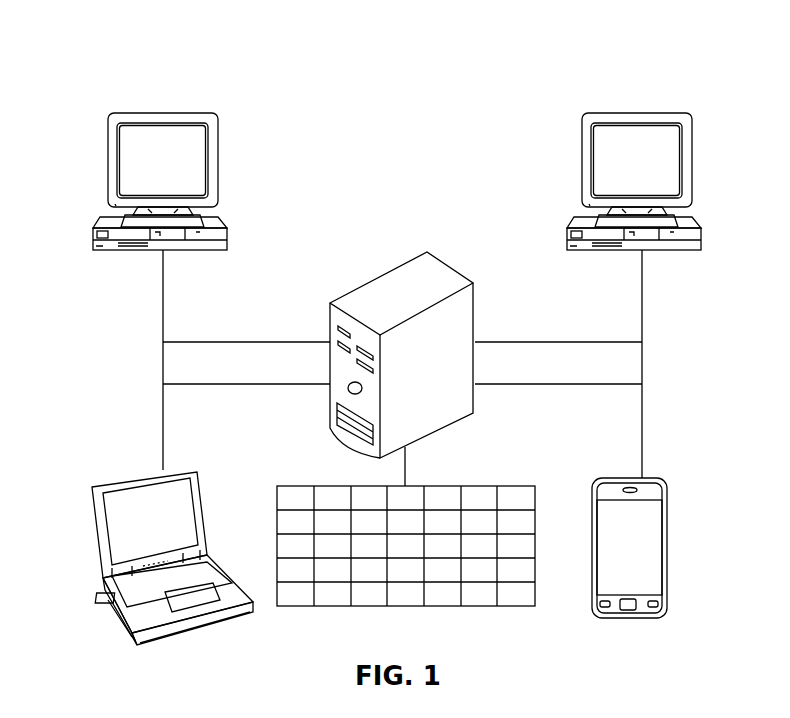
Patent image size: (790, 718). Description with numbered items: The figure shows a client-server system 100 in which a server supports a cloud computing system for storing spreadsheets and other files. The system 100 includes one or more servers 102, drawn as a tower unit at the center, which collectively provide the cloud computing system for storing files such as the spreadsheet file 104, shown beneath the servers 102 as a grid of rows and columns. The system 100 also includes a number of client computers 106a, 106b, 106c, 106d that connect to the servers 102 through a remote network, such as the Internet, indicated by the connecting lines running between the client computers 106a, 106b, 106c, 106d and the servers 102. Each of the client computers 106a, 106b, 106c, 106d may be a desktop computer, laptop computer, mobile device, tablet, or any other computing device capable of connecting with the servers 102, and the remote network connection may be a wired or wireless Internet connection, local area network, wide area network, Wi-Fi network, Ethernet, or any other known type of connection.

The system 100 is at (95, 40).
The servers 102 is at (387, 273).
The spreadsheet file 104 is at (338, 486).
The client computer 106a is at (158, 113).
The client computer 106b is at (636, 113).
The client computer 106c is at (138, 475).
The client computer 106d is at (610, 478).